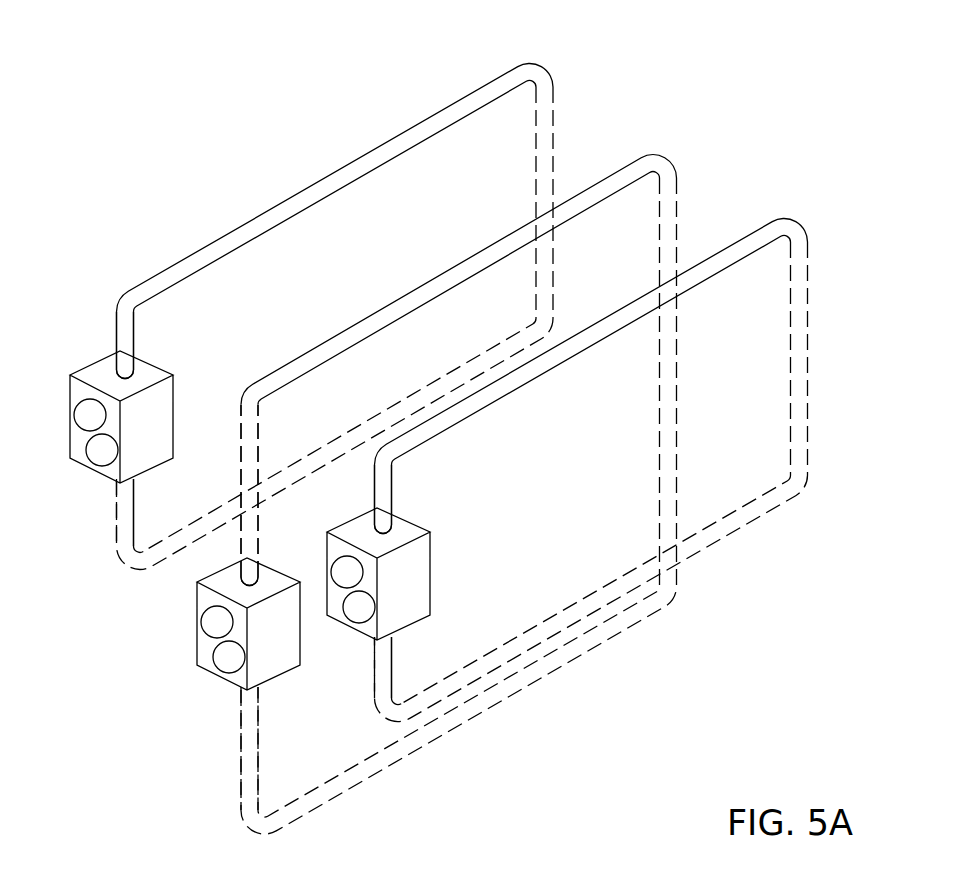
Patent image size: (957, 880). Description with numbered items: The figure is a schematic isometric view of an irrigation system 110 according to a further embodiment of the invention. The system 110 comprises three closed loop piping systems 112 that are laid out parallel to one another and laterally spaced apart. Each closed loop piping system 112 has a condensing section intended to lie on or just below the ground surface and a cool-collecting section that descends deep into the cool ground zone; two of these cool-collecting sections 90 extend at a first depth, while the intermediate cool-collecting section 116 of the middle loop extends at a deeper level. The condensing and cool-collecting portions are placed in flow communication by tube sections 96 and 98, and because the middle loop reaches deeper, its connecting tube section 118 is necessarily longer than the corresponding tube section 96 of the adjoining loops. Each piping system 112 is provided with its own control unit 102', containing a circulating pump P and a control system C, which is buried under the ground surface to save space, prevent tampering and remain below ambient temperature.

The system 110 is at (643, 97).
The closed loop piping systems 112 is at (753, 217).
The tube section 98 is at (547, 133).
The tube section 96 is at (127, 335).
The cool-collecting section 90 is at (125, 515).
The control unit 102' is at (290, 535).
The connecting tube section 118 is at (248, 448).
The intermediate cool-collecting section 116 is at (397, 757).